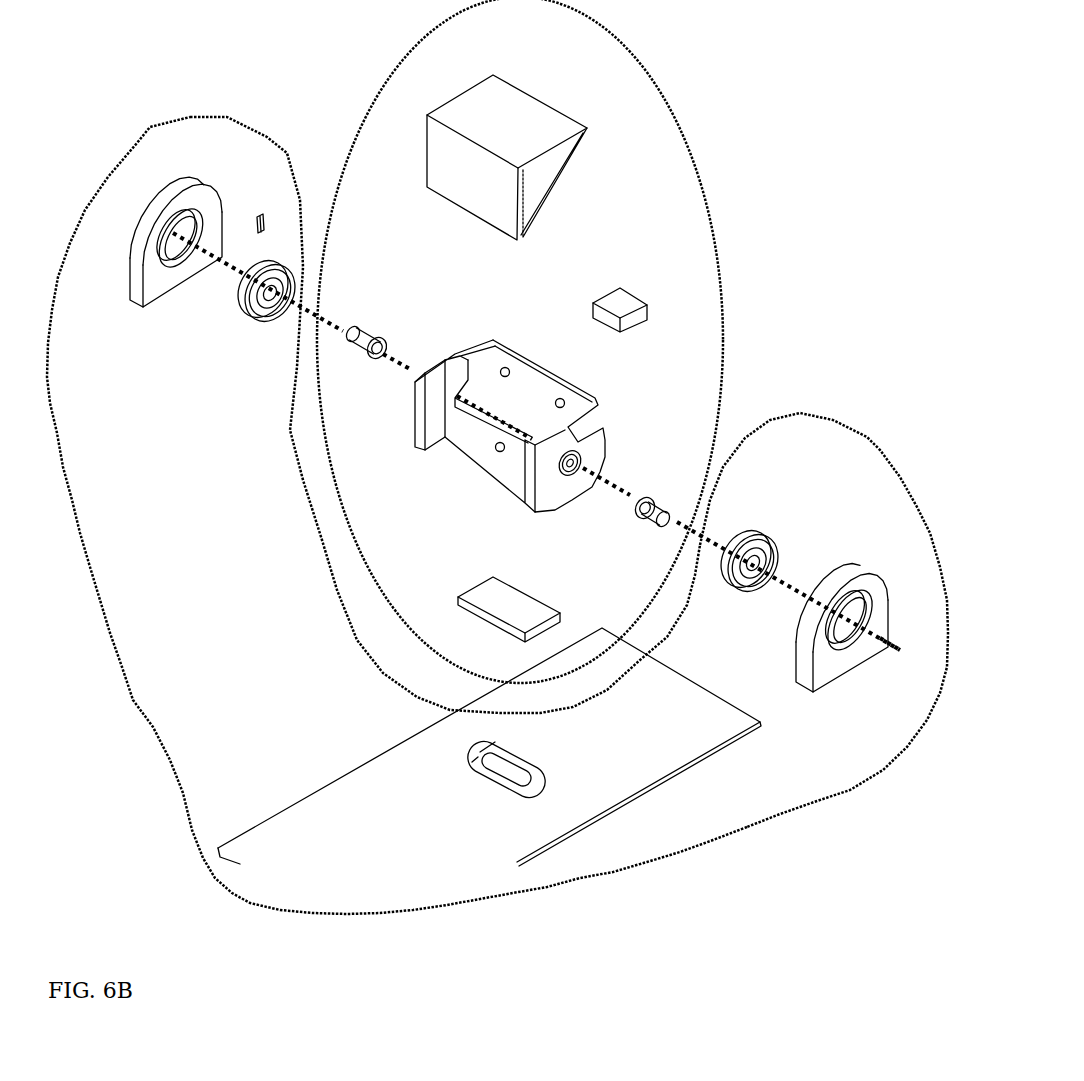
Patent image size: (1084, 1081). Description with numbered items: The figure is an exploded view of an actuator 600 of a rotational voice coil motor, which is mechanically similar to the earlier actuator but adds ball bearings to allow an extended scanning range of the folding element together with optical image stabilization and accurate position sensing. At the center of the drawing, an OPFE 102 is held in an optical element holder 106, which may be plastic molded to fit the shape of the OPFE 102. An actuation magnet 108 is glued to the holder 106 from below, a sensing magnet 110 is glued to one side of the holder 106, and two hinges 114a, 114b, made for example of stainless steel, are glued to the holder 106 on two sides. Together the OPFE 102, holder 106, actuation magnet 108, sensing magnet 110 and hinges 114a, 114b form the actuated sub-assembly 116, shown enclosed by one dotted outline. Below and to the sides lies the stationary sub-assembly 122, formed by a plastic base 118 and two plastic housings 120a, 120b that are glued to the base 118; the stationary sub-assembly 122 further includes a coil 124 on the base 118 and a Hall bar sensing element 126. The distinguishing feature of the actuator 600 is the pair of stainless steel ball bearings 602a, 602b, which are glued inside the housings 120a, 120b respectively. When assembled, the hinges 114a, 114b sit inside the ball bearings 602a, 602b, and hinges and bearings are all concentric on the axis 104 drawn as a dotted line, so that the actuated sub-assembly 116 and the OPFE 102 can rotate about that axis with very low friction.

The actuator 600 is at (232, 56).
The OPFE 102 is at (533, 187).
The axis 104 is at (900, 658).
The optical element holder 106 is at (418, 423).
The actuation magnet 108 is at (487, 595).
The sensing magnet 110 is at (618, 302).
The hinge 114a is at (370, 337).
The hinge 114b is at (652, 525).
The actuated sub-assembly 116 is at (713, 218).
The base 118 is at (317, 833).
The housing 120a is at (138, 288).
The housing 120b is at (827, 587).
The stationary sub-assembly 122 is at (877, 450).
The coil 124 is at (538, 780).
The Hall bar sensing element 126 is at (253, 209).
The ball bearing 602a is at (250, 313).
The ball bearing 602b is at (742, 543).